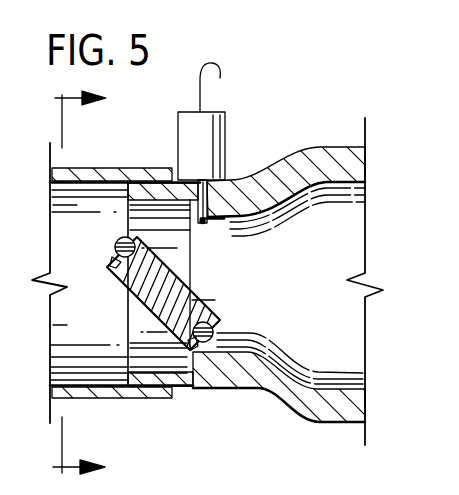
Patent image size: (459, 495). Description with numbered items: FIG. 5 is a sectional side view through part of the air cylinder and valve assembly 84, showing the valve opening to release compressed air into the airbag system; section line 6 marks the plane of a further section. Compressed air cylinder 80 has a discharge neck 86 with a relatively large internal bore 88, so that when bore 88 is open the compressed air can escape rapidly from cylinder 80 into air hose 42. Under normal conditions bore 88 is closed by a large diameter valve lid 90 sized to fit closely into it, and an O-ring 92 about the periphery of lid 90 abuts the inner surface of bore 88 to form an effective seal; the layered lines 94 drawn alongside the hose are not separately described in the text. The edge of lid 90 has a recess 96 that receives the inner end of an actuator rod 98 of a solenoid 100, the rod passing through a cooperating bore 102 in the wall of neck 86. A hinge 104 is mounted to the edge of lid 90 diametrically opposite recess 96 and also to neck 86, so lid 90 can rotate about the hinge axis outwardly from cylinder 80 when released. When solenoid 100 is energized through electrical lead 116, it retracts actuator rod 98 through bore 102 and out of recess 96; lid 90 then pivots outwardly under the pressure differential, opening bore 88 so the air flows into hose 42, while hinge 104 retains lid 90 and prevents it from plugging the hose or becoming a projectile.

The section line 6- 6 is at (87, 285).
The air hose 42 is at (96, 167).
The compressed air cylinder 80 is at (338, 424).
The valve assembly 84 is at (274, 124).
The discharge neck 86 is at (250, 178).
The bore 88 is at (108, 297).
The valve lid 90 is at (191, 296).
The O-ring 92 is at (215, 334).
The flexible liner layers 94 is at (240, 348).
The recess 96 is at (113, 262).
The actuator rod 98 is at (203, 228).
The solenoid 100 is at (212, 139).
The cooperating bore 102 is at (212, 221).
The hinge 104 is at (200, 389).
The electrical lead 116 is at (222, 78).